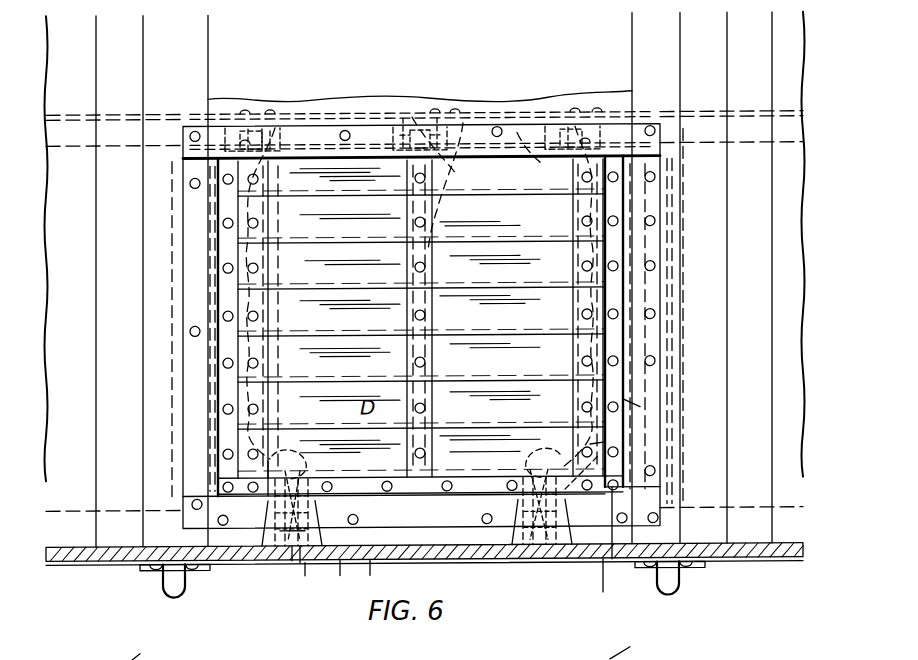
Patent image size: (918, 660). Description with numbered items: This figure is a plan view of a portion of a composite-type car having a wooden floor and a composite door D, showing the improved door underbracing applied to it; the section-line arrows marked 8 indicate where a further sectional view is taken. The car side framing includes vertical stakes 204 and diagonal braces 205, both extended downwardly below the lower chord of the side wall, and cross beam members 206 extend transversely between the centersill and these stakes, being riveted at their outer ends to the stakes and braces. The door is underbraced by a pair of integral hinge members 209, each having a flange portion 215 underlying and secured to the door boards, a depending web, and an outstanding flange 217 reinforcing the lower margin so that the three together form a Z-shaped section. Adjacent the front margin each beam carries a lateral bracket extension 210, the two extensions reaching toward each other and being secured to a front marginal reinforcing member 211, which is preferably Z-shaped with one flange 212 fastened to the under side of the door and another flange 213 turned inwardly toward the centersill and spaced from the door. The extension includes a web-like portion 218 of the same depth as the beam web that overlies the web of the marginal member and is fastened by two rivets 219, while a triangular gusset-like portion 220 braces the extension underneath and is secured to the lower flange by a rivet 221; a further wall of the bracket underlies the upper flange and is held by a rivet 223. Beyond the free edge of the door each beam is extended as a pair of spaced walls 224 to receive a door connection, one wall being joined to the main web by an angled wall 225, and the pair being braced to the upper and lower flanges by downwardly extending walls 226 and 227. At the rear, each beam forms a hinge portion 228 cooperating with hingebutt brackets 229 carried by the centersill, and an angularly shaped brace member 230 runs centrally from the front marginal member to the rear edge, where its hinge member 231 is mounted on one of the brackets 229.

The vertical stakes 204 is at (186, 588).
The diagonal braces 205 is at (389, 646).
The cross beam members 206 is at (91, 578).
The integral hinge members 209 is at (359, 122).
The lateral bracket extension 210 is at (337, 560).
The front marginal reinforcing member 211 is at (417, 545).
The flange 212 is at (470, 562).
The flange 213 is at (640, 410).
The flange portion 215 is at (588, 452).
The outstanding flange 217 is at (384, 122).
The web-like portion 218 is at (290, 545).
The rivets 219 is at (409, 122).
The gusset-like portion 220 is at (370, 562).
The rivet 221 is at (270, 535).
The rivet 223 is at (300, 566).
The walls 224 is at (292, 562).
The wall 225 is at (278, 556).
The downwardly extending wall 226 is at (612, 562).
The downwardly extending wall 227 is at (305, 576).
The hinge portion 228 is at (270, 125).
The hingebutt brackets 229 is at (300, 122).
The angularly shaped brace member 230 is at (461, 122).
The hinge member 231 is at (427, 120).
The section line 8 is at (637, 88).